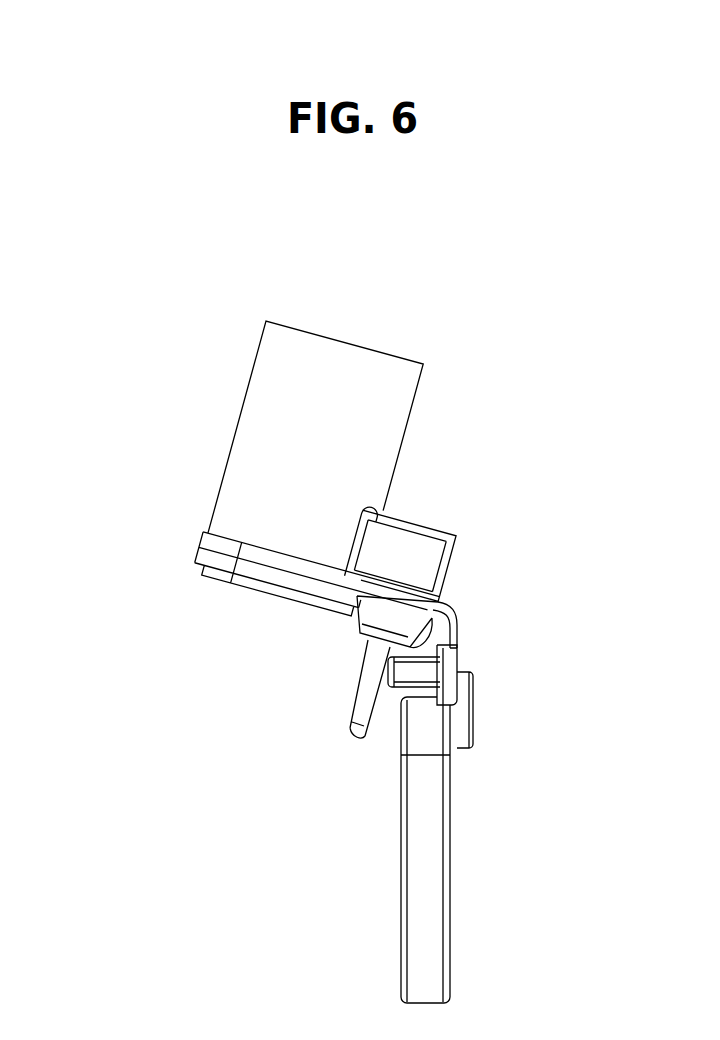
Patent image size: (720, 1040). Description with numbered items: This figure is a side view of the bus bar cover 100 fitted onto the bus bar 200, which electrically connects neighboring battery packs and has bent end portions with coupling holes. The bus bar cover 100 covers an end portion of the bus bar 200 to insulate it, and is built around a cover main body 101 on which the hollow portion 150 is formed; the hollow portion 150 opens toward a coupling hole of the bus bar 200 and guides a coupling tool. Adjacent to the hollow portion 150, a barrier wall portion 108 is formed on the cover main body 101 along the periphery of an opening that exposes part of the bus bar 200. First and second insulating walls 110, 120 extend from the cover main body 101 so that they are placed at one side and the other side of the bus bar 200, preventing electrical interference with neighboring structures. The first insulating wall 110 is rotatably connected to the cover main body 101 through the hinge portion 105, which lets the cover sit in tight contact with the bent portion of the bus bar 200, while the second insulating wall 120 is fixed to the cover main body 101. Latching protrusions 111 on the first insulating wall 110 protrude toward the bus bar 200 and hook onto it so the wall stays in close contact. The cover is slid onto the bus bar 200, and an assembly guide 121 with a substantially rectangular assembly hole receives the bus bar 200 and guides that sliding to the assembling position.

The bus bar cover 100 is at (136, 503).
The hollow portion 150 is at (398, 430).
The cover main body 101 is at (243, 568).
The barrier wall portion 108 is at (445, 537).
The hinge portion 105 is at (450, 615).
The assembly guide 121 is at (370, 622).
The second insulating wall 120 is at (366, 693).
The latching protrusions 111 is at (432, 668).
The first insulating wall 110 is at (473, 710).
The bus bar 200 is at (483, 877).